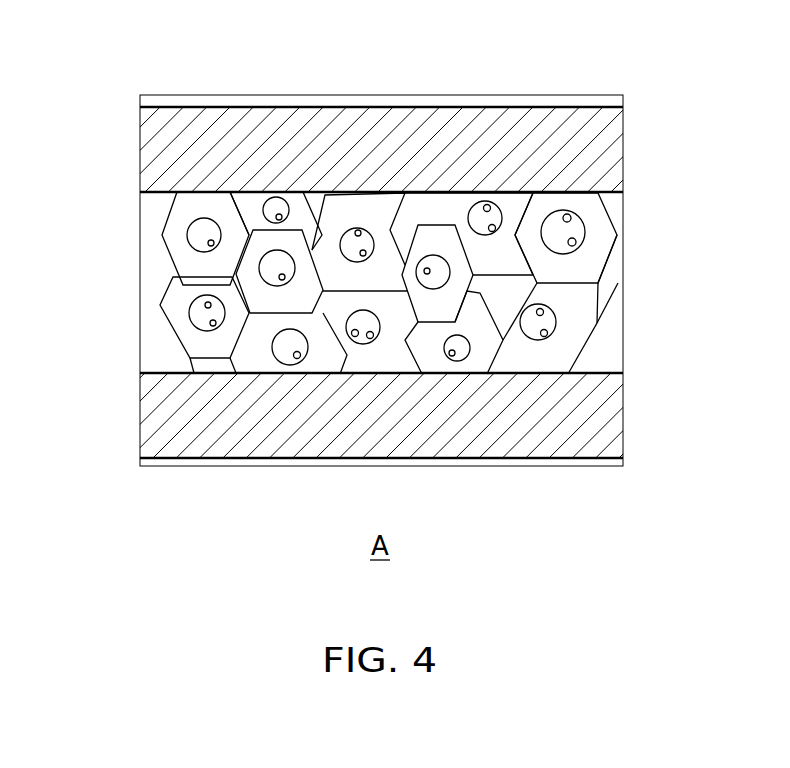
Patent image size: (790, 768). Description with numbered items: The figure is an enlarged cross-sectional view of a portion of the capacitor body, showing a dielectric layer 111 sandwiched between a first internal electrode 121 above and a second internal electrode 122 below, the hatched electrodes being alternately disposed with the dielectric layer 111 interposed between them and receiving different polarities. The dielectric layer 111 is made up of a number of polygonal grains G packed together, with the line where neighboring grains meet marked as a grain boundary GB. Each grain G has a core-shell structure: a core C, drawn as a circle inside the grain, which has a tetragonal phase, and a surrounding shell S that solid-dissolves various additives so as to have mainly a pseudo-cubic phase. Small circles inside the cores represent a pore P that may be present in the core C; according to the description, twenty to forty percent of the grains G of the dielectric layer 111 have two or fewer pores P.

The dielectric layer 111 is at (153, 340).
The first internal electrode 121 is at (174, 130).
The second internal electrode 122 is at (197, 443).
The core C is at (585, 223).
The shell S is at (598, 242).
The grain G is at (678, 193).
The grain boundary GB is at (597, 274).
The pore P is at (297, 358).